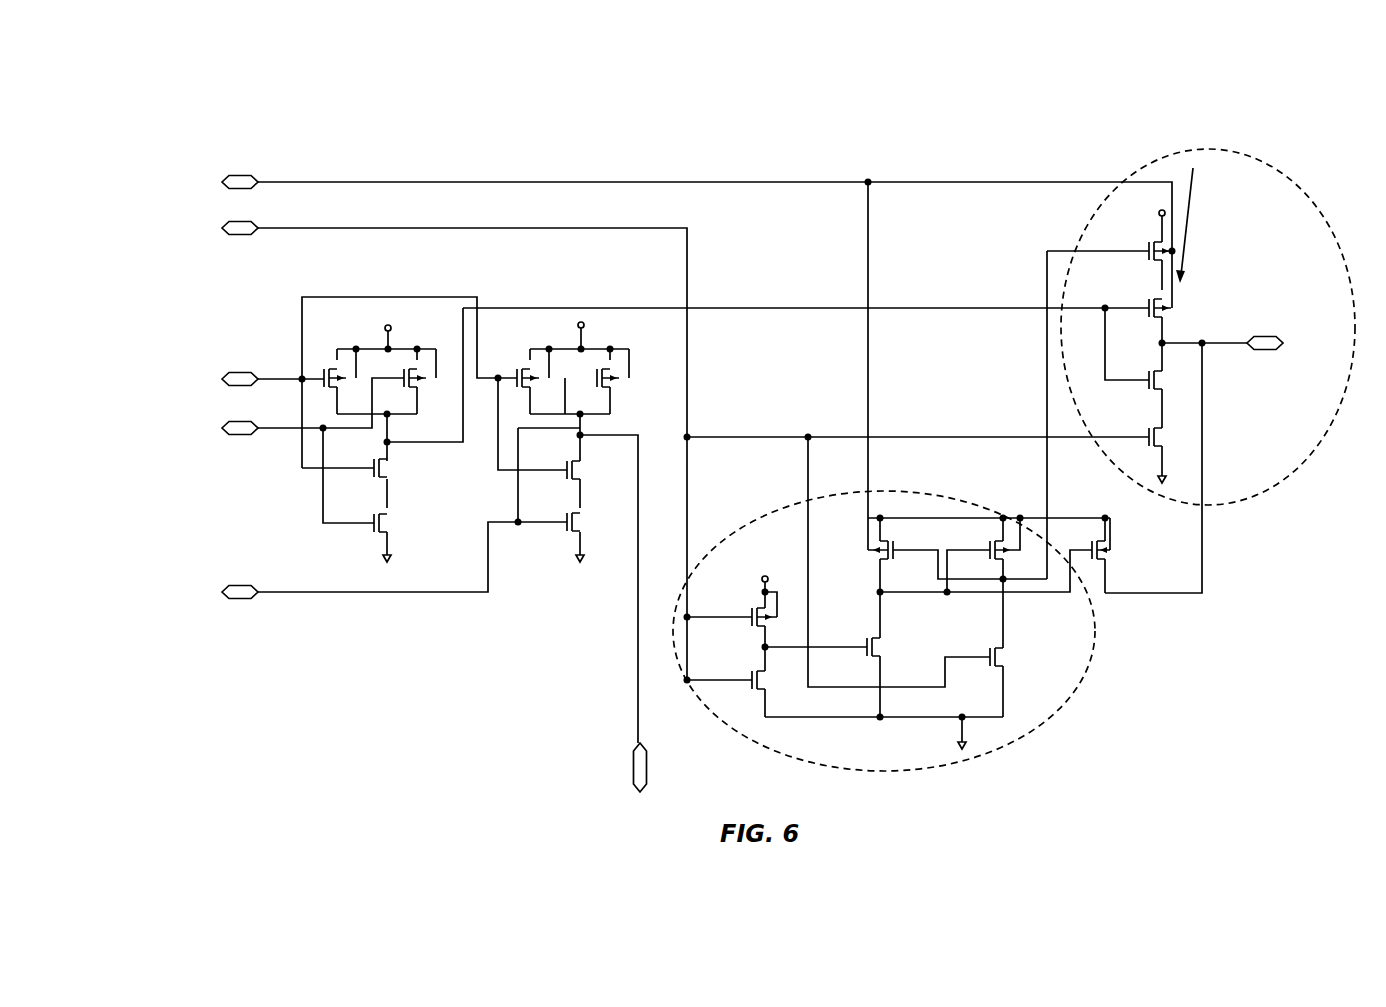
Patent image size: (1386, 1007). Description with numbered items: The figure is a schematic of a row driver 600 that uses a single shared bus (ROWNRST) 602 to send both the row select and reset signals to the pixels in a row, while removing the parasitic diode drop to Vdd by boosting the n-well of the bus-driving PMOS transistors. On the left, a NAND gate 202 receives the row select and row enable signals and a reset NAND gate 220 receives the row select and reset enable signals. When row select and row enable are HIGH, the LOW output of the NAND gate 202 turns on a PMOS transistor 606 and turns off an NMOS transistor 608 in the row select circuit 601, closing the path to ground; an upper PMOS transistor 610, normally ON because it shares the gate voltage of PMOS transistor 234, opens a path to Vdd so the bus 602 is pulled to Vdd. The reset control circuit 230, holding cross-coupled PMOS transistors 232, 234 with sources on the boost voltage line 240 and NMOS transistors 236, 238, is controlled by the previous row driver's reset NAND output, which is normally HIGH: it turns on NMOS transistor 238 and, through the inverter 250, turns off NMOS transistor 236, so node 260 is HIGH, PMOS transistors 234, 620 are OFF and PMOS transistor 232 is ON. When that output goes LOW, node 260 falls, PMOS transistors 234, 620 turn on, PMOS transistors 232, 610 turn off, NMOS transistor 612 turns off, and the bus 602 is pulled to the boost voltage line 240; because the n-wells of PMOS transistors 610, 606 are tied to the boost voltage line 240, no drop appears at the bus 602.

The row driver 600 is at (293, 112).
The boost voltage line 240 is at (1012, 181).
The NAND gate 202 is at (308, 493).
The reset NAND gate 220 is at (582, 592).
The row select circuit 601 is at (1277, 150).
The upper PMOS transistor 610 is at (1157, 240).
The PMOS transistor 606 is at (1157, 297).
The bus (ROWNRST) 602 is at (1252, 334).
The NMOS transistor 608 is at (1147, 372).
The NMOS transistor 612 is at (1158, 433).
The reset control circuit 230 is at (1047, 752).
The inverter 250 is at (778, 742).
The PMOS transistor 232 is at (893, 541).
The node 260 is at (882, 594).
The NMOS transistor 236 is at (866, 638).
The PMOS transistor 234 is at (1020, 557).
The NMOS transistor 238 is at (999, 658).
The PMOS transistor 620 is at (1114, 548).